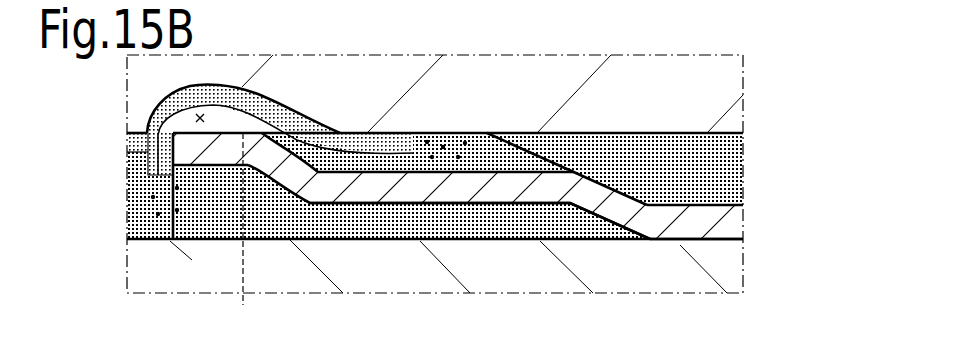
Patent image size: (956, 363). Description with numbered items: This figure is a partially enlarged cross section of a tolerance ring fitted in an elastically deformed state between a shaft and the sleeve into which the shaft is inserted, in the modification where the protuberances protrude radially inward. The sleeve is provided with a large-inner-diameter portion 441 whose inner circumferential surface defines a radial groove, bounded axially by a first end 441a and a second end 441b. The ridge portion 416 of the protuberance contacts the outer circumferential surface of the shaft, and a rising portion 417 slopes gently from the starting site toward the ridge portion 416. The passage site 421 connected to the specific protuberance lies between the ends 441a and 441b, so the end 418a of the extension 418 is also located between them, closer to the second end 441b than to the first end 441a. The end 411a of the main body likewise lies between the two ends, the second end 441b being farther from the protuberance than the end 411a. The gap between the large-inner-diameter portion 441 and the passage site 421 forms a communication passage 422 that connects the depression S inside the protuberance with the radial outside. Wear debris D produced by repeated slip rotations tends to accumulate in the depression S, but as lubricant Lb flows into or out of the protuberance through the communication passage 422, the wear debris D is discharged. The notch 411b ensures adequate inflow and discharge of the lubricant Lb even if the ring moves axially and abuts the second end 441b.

The large-inner-diameter portion 441 is at (215, 86).
The communication passage 422 is at (197, 114).
The first end of the large-inner-diameter portion 441a is at (364, 134).
The second end of the large-inner-diameter portion 441b is at (130, 135).
The end of the main body 411a is at (159, 172).
The notch 411b is at (245, 236).
The passage site 421 is at (210, 157).
The end of the extension 418a is at (250, 167).
The extension 418 is at (357, 205).
The rising portion 417 is at (592, 215).
The ridge portion 416 is at (677, 243).
The wear debris D is at (446, 140).
The lubricant Lb is at (565, 143).
The depression S is at (640, 163).